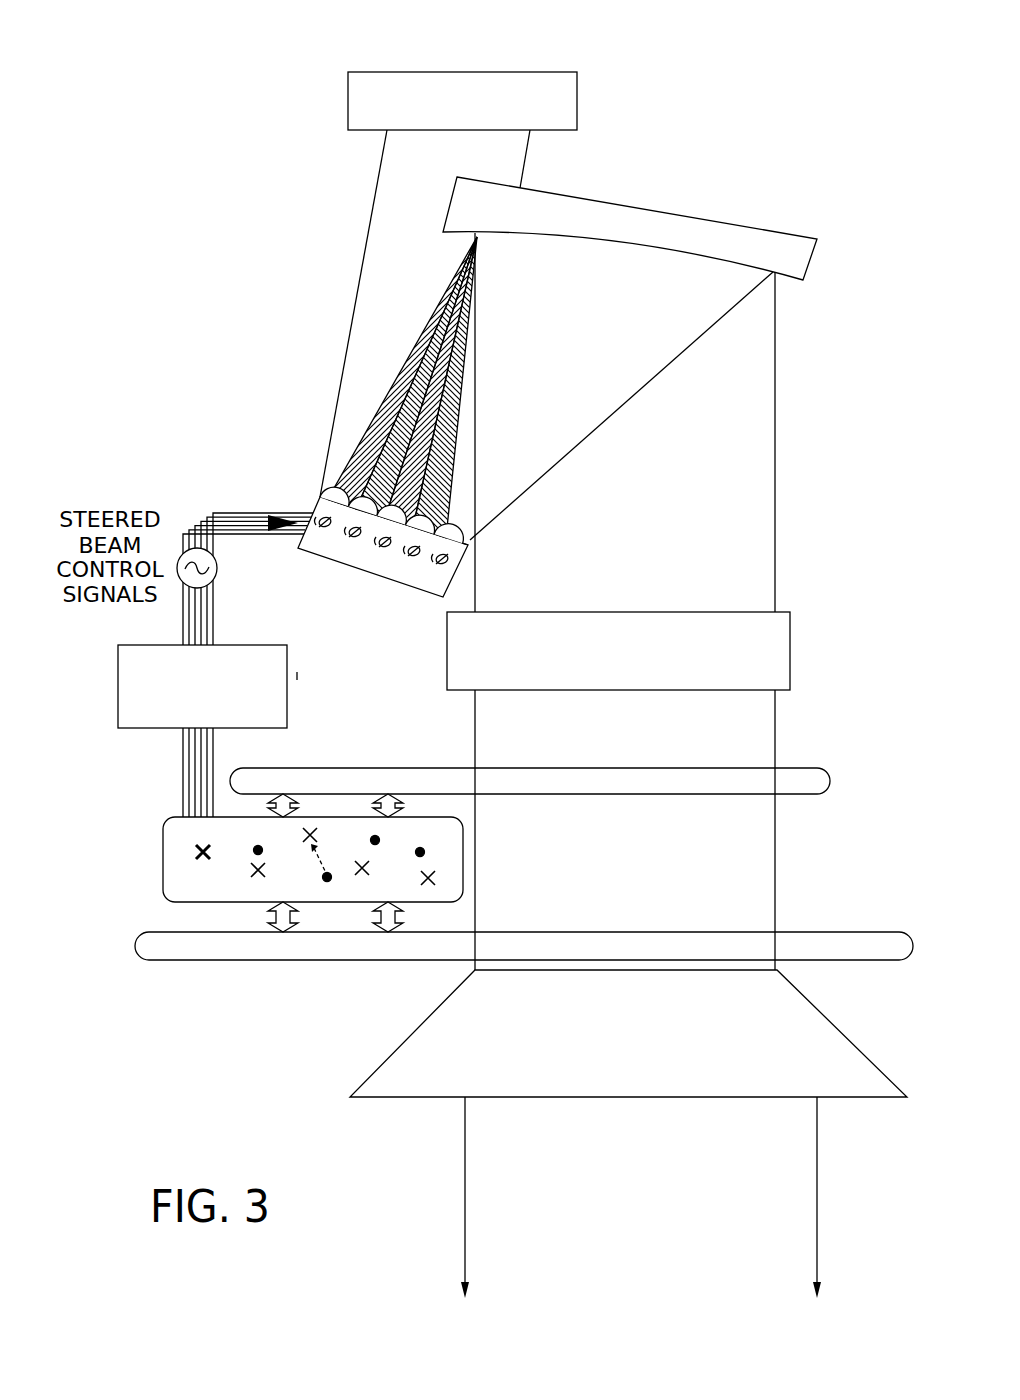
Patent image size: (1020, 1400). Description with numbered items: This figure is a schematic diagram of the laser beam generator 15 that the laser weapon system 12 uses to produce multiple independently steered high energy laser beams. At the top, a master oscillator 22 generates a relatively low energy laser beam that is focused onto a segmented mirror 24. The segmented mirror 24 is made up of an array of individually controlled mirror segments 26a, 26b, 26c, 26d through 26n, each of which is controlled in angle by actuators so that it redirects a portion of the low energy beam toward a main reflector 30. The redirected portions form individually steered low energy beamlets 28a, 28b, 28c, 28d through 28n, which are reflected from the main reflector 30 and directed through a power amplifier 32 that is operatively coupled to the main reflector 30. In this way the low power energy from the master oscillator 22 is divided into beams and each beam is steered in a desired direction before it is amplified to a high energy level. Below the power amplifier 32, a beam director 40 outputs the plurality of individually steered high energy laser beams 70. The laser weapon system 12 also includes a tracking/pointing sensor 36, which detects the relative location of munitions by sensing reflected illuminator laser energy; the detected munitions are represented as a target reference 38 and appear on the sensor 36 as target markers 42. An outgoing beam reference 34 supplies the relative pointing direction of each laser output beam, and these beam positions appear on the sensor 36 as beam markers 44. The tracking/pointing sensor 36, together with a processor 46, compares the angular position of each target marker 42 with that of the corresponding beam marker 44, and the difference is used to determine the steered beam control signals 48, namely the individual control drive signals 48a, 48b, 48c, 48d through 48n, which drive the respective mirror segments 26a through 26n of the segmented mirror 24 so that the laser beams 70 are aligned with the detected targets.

The laser weapon system 12 is at (230, 230).
The laser beam generator 15 is at (604, 56).
The master oscillator 22 is at (577, 100).
The segmented mirror 24 is at (396, 489).
The mirror segment 26a is at (332, 488).
The mirror segment 26b is at (360, 480).
The mirror segment 26c is at (378, 450).
The mirror segment 26d is at (445, 520).
The mirror segment 26n is at (462, 532).
The beamlet 28a is at (407, 362).
The beamlet 28b is at (440, 296).
The beamlet 28c is at (470, 307).
The beamlet 28d is at (461, 382).
The beamlet 28n is at (628, 400).
The main reflector 30 is at (813, 258).
The power amplifier 32 is at (791, 656).
The outgoing beam reference 34 is at (831, 795).
The tracking/pointing sensor 36 is at (246, 869).
The target reference 38 is at (877, 931).
The beam director 40 is at (822, 1016).
The target marker 42 is at (254, 878).
The beam marker 44 is at (258, 845).
The processor 46 is at (118, 680).
The steered beam control signals 48 is at (213, 518).
The control signal 48a is at (220, 512).
The control signal 48b is at (238, 516).
The control signal 48c is at (210, 512).
The control signal 48d is at (273, 535).
The control signal 48n is at (233, 533).
The steered high energy laser beams 70 is at (797, 1184).